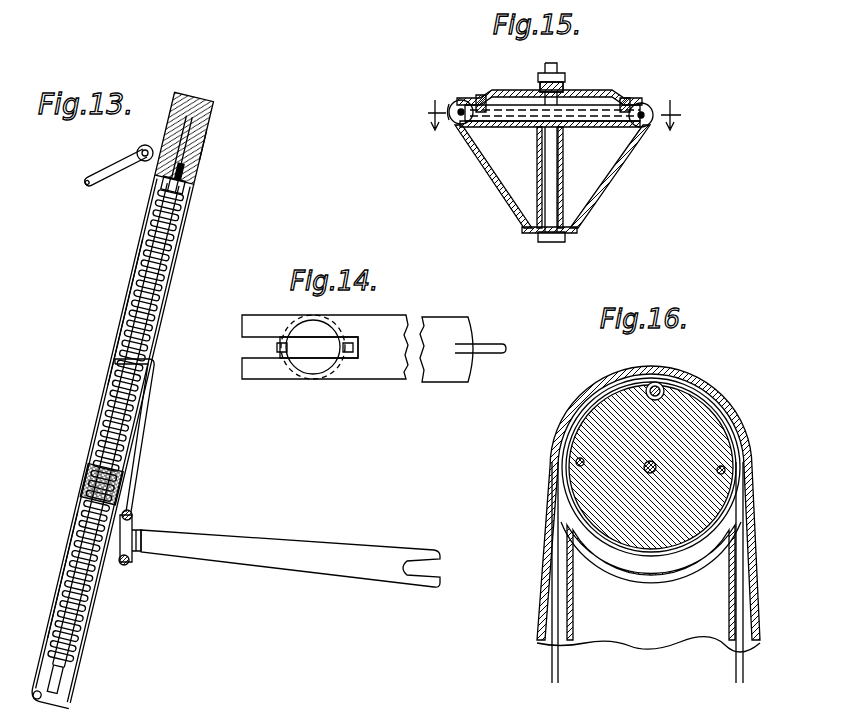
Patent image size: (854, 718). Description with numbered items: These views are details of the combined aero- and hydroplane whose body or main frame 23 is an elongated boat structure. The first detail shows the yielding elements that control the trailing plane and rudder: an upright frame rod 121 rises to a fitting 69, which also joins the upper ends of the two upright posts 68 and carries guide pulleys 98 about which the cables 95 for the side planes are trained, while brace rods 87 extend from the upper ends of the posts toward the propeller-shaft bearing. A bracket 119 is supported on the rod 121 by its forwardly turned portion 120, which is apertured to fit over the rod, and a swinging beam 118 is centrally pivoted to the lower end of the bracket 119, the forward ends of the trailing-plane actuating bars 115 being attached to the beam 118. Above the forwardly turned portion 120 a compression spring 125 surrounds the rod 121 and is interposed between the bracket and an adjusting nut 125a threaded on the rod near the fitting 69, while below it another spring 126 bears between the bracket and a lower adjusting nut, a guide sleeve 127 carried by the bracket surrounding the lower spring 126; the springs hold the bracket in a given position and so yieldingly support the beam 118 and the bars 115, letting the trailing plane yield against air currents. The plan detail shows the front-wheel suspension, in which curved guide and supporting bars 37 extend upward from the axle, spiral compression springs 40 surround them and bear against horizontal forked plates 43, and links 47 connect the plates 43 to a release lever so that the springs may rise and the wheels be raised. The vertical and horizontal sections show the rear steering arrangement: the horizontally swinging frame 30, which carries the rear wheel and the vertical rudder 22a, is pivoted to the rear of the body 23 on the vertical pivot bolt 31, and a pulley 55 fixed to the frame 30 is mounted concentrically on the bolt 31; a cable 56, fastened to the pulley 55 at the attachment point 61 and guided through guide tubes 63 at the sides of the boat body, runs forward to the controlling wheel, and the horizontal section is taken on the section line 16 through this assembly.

In FIG. 13, the cables 95 is at (88, 678).
In FIG. 13, the guide pulleys 98 is at (204, 100).
In FIG. 13, the fitting 69 is at (201, 140).
In FIG. 13, the brace rods 87 is at (110, 172).
In FIG. 13, the upright frame rod 121 is at (198, 173).
In FIG. 13, the adjusting nut 125a is at (152, 183).
In FIG. 13, the spring 125 is at (182, 242).
In FIG. 13, the upright posts 68 is at (128, 304).
In FIG. 13, the forwardly turned portion 120 is at (150, 360).
In FIG. 13, the guide sleeve 127 is at (88, 470).
In FIG. 13, the swinging beam 118 is at (133, 528).
In FIG. 13, the spring 126 is at (80, 552).
In FIG. 13, the actuating bars 115 is at (252, 535).
In FIG. 13, the bracket 119 is at (118, 566).
In FIG. 14, the spiral compression springs 40 is at (282, 350).
In FIG. 14, the curved guide and supporting bars 37 is at (320, 345).
In FIG. 14, the forked plates 43 is at (381, 370).
In FIG. 14, the links 47 is at (492, 345).
In FIG. 15, the cable 56 is at (455, 108).
In FIG. 16, the cable 56 is at (560, 668).
In FIG. 15, the vertical steering plane or rudder 22a is at (478, 95).
In FIG. 16, the vertical steering plane or rudder 22a is at (576, 462).
In FIG. 15, the pulley 55 is at (586, 112).
In FIG. 16, the pulley 55 is at (694, 412).
In FIG. 15, the section line 16 is at (553, 115).
In FIG. 15, the body or main frame 23 is at (614, 180).
In FIG. 15, the vertical pivot bolt 31 is at (553, 240).
In FIG. 16, the vertical pivot bolt 31 is at (644, 470).
In FIG. 16, the attachment point 61 is at (655, 382).
In FIG. 16, the guide tubes 63 is at (542, 538).
In FIG. 16, the horizontally swinging frame 30 is at (651, 581).